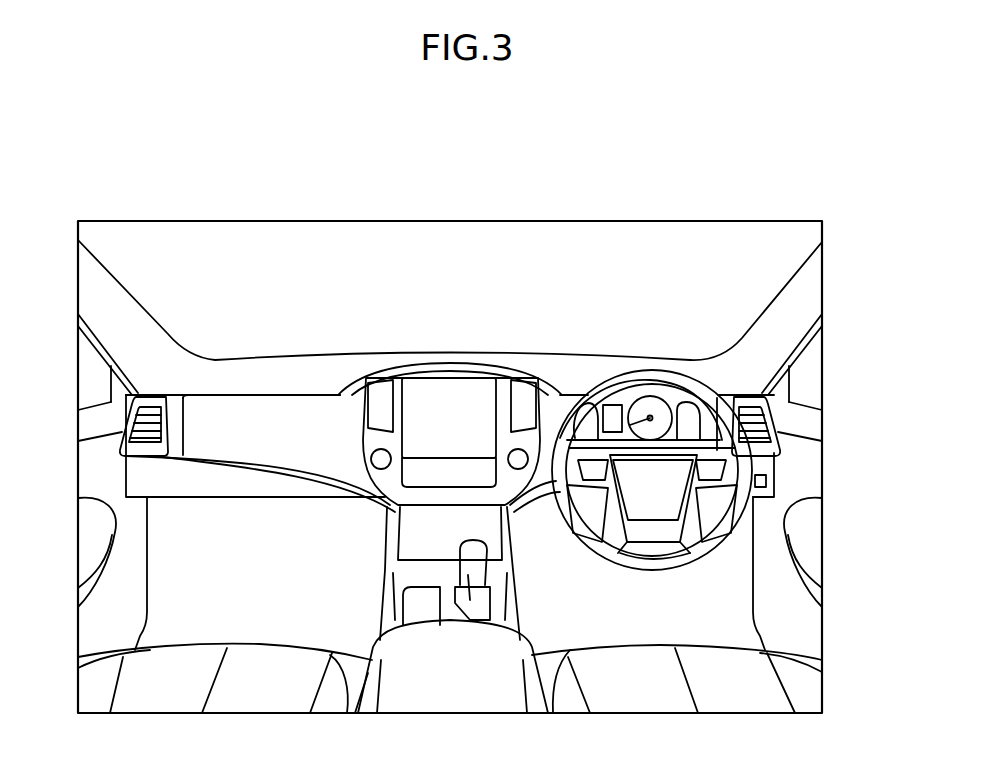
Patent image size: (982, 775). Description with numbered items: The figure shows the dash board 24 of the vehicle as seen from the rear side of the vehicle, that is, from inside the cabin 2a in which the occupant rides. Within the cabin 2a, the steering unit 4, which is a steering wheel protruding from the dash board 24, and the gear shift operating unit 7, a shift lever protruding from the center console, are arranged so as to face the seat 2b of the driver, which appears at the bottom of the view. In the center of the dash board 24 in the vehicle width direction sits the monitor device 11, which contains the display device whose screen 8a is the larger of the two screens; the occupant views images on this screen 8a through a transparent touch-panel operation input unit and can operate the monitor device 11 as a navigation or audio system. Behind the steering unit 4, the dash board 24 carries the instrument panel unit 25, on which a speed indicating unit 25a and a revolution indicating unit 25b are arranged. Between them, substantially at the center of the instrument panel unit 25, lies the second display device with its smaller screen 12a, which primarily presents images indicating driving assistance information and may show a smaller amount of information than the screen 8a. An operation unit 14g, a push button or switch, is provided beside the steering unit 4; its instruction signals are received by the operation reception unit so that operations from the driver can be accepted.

The cabin 2a is at (266, 240).
The seat 2b is at (650, 703).
The steering unit 4 is at (678, 375).
The gear shift operating unit 7 is at (475, 576).
The screen 8a is at (475, 393).
The monitor device 11 is at (440, 364).
The screen 12a is at (612, 404).
The operation unit 14g is at (768, 481).
The dash board 24 is at (350, 358).
The instrument panel unit 25 is at (627, 392).
The speed indicating unit 25a is at (567, 402).
The revolution indicating unit 25b is at (650, 415).